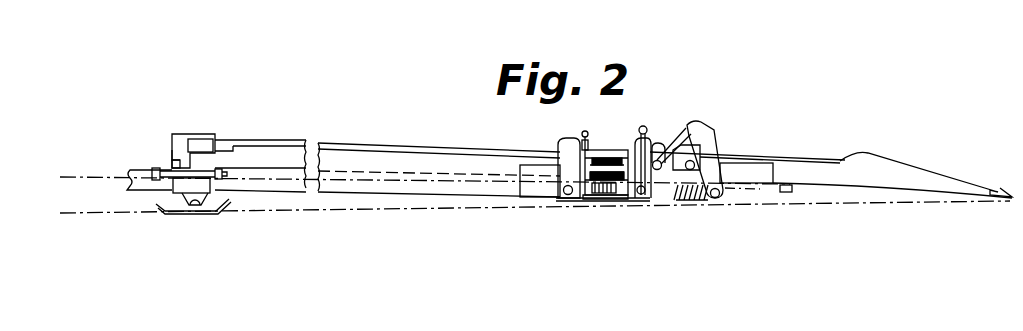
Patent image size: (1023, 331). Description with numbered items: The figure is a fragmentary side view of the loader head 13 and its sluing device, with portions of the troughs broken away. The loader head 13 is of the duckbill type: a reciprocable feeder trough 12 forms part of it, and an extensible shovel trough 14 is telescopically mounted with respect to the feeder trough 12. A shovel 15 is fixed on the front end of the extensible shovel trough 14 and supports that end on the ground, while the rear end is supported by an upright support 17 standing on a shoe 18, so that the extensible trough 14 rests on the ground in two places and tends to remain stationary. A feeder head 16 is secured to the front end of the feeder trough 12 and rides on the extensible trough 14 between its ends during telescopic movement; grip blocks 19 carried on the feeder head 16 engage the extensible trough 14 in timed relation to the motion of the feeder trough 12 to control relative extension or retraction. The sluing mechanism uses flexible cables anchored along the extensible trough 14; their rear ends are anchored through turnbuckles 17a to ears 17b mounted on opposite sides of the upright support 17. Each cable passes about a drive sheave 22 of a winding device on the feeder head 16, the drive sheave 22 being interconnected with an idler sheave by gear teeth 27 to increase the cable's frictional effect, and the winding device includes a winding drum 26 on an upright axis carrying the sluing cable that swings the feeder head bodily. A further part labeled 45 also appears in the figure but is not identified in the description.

The feeder trough section 12 is at (135, 181).
The loader head 13 is at (819, 148).
The extensible shovel trough 14 is at (345, 128).
The shovel 15 is at (925, 172).
The feeder head 16 is at (655, 127).
The upright support 17 is at (190, 133).
The turnbuckles 17a is at (172, 155).
The ears 17b is at (218, 168).
The shoe 18 is at (231, 204).
The grip blocks 19 is at (718, 140).
The drive sheave 22 is at (600, 196).
The winding drum 26 is at (603, 152).
The gear teeth 27 is at (591, 200).
The screw 45 is at (585, 131).